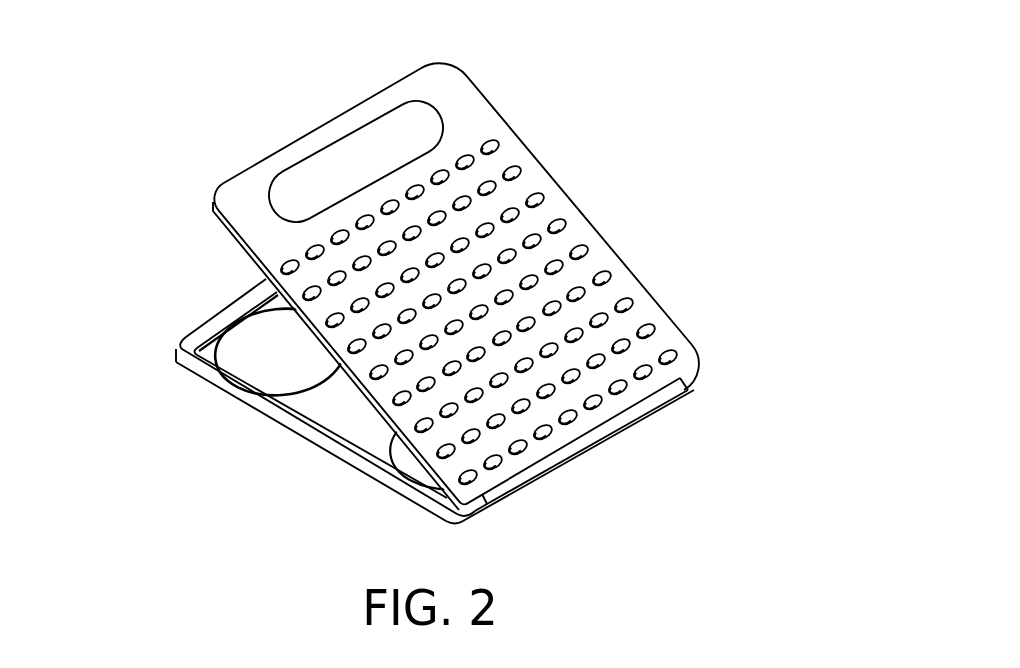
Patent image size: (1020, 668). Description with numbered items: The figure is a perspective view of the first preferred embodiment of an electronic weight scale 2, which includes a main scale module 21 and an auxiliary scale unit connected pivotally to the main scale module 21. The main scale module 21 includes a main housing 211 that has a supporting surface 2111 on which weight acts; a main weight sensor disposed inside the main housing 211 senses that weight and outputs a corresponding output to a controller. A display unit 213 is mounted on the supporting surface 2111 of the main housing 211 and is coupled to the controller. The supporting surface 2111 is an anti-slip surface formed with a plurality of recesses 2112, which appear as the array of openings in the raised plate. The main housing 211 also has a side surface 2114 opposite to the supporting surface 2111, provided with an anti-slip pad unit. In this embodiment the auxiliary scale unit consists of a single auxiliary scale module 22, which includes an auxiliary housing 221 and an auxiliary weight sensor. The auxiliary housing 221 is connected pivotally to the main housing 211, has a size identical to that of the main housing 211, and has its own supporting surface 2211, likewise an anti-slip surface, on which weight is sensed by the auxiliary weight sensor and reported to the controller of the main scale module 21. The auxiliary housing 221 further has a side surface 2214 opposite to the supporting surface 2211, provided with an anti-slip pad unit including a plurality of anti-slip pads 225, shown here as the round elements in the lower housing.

The electronic weight scale 2 is at (428, 268).
The main scale module 21 is at (452, 261).
The main housing 211 is at (452, 261).
The supporting surface 2111 is at (470, 87).
The recesses 2112 is at (580, 250).
The side surface 2114 is at (233, 247).
The display unit 213 is at (337, 167).
The auxiliary scale module 22 is at (382, 395).
The auxiliary housing 221 is at (183, 371).
The supporting surface 2211 is at (263, 423).
The side surface 2214 is at (193, 334).
The anti-slip pads 225 is at (392, 436).